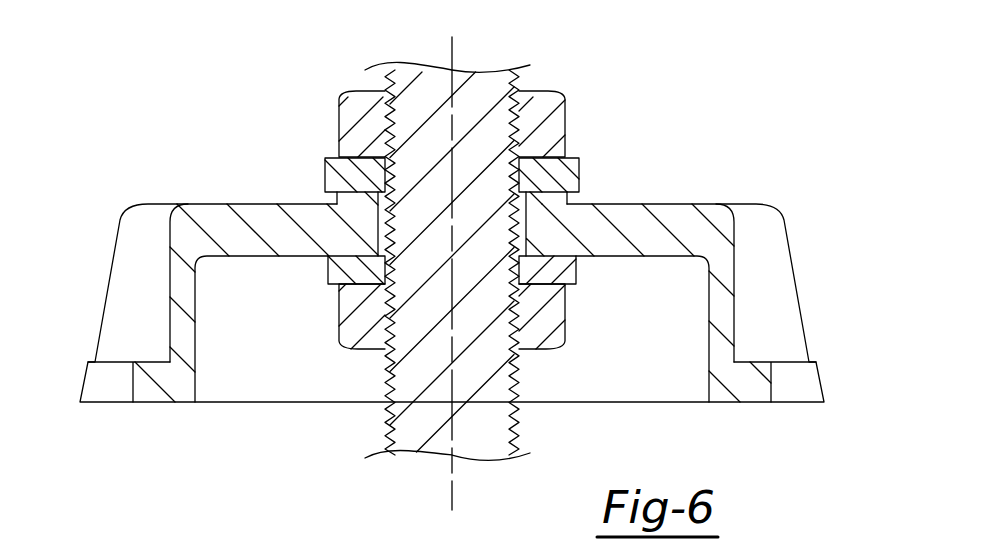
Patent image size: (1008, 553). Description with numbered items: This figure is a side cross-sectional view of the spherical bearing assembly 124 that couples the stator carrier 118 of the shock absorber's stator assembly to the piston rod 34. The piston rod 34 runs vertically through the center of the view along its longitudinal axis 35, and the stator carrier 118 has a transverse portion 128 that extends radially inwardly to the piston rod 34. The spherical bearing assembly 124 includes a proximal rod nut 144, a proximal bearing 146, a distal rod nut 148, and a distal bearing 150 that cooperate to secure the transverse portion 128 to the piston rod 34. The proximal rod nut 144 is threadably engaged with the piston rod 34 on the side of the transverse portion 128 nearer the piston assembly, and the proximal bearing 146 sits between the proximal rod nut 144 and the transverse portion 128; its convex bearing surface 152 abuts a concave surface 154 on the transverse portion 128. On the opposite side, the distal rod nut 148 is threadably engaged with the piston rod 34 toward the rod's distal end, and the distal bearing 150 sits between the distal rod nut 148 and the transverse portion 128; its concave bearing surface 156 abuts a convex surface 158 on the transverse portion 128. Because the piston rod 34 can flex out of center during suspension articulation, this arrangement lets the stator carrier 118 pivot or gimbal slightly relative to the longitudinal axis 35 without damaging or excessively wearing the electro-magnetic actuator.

The piston rod 34 is at (410, 100).
The longitudinal axis 35 is at (452, 482).
The stator carrier 118 is at (800, 292).
The spherical bearing assembly 124 is at (258, 169).
The transverse portion 128 is at (242, 247).
The proximal rod nut 144 is at (538, 343).
The proximal bearing 146 is at (563, 278).
The distal rod nut 148 is at (542, 100).
The distal bearing 150 is at (581, 165).
The convex bearing surface 152 is at (550, 246).
The concave surface 154 is at (353, 268).
The concave bearing surface 156 is at (558, 200).
The convex surface 158 is at (349, 180).